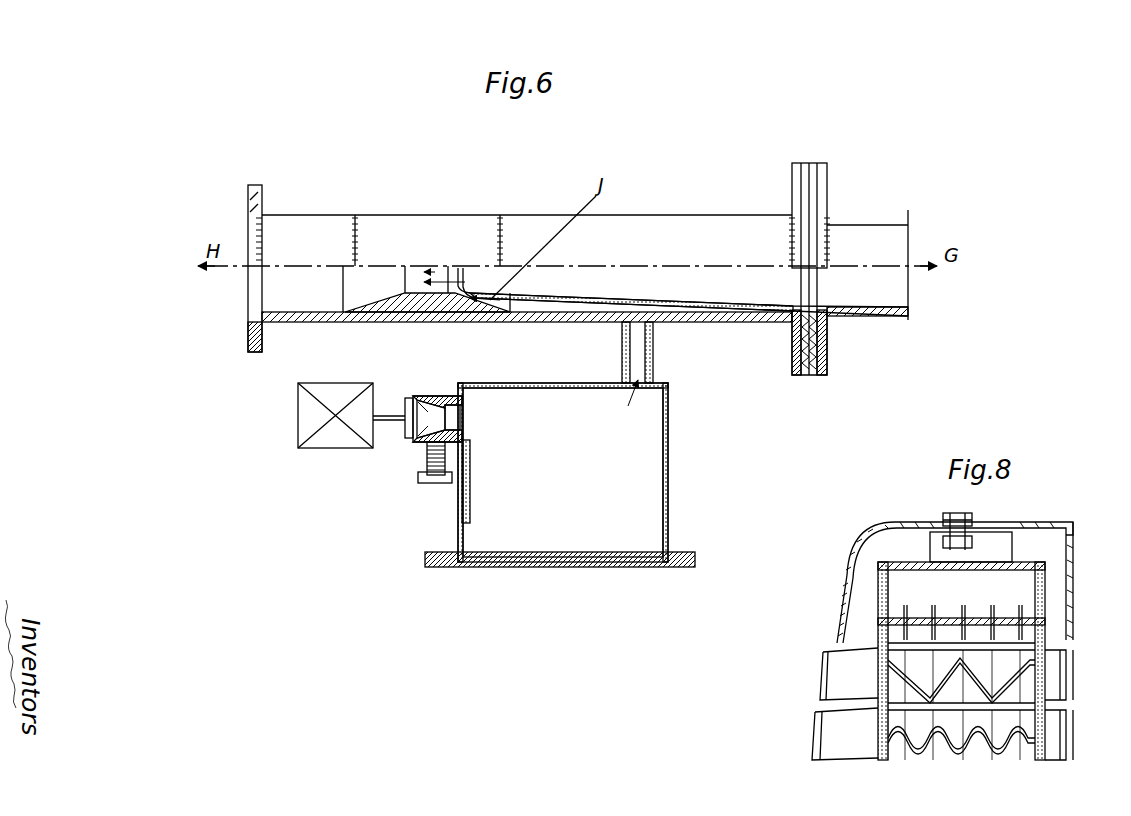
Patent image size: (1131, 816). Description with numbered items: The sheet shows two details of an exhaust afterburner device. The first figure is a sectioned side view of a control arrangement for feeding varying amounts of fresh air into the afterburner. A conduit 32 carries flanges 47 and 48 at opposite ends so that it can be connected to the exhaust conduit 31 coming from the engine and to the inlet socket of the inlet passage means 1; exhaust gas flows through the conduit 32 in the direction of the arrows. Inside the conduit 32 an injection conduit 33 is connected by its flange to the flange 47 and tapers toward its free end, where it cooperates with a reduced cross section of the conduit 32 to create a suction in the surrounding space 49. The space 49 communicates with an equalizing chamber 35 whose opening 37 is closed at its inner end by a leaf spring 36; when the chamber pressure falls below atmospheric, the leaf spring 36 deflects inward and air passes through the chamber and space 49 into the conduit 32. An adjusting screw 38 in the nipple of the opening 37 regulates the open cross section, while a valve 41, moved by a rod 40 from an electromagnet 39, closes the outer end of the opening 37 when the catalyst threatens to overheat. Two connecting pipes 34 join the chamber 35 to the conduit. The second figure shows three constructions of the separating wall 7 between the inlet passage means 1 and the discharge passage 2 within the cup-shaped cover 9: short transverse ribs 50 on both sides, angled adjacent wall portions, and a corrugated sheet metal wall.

In FIG. 6, the exhaust conduit 31 is at (860, 210).
In FIG. 6, the conduit 32 is at (668, 217).
In FIG. 6, the injection conduit 33 is at (728, 312).
In FIG. 6, the connecting pipes 34 is at (656, 328).
In FIG. 6, the equalizing chamber 35 is at (655, 468).
In FIG. 6, the leaf spring 36 is at (463, 408).
In FIG. 6, the opening 37 is at (420, 438).
In FIG. 6, the adjusting screw 38 is at (431, 484).
In FIG. 6, the electromagnet 39 is at (332, 448).
In FIG. 6, the rod 40 is at (384, 412).
In FIG. 6, the valve 41 is at (411, 398).
In FIG. 6, the flange 47 is at (798, 176).
In FIG. 6, the flange 48 is at (256, 205).
In FIG. 6, the space 49 is at (568, 302).
In FIG. 8, the inlet passage means 1 is at (1028, 632).
In FIG. 8, the discharge passage 2 is at (1022, 578).
In FIG. 8, the separating wall 7 is at (1010, 622).
In FIG. 8, the cup-shaped cover 9 is at (840, 608).
In FIG. 8, the short ribs 50 is at (935, 608).